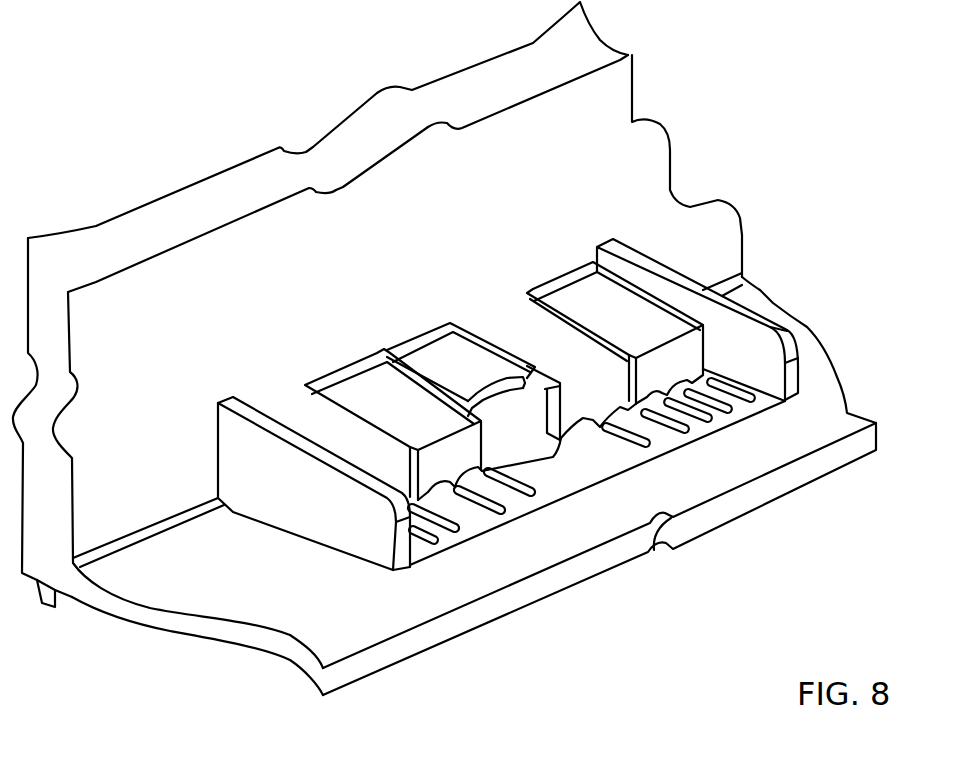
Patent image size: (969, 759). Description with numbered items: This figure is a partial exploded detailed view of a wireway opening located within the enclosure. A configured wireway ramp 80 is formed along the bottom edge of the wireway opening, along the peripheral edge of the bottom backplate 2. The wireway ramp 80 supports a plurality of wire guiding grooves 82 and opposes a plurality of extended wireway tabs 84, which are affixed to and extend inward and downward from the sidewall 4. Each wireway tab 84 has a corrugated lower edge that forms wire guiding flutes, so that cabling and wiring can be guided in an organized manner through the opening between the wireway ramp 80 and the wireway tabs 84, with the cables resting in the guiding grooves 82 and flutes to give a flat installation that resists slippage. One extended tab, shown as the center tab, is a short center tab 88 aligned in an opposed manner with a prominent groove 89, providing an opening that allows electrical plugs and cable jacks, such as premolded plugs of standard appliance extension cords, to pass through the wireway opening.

The bottom backplate 2 is at (752, 463).
The sidewall 4 is at (252, 300).
The wireway ramp 80 is at (518, 510).
The wire guiding grooves 82 is at (477, 507).
The extended wireway tabs 84 is at (360, 387).
The short center tab 88 is at (440, 358).
The prominent groove 89 is at (560, 472).